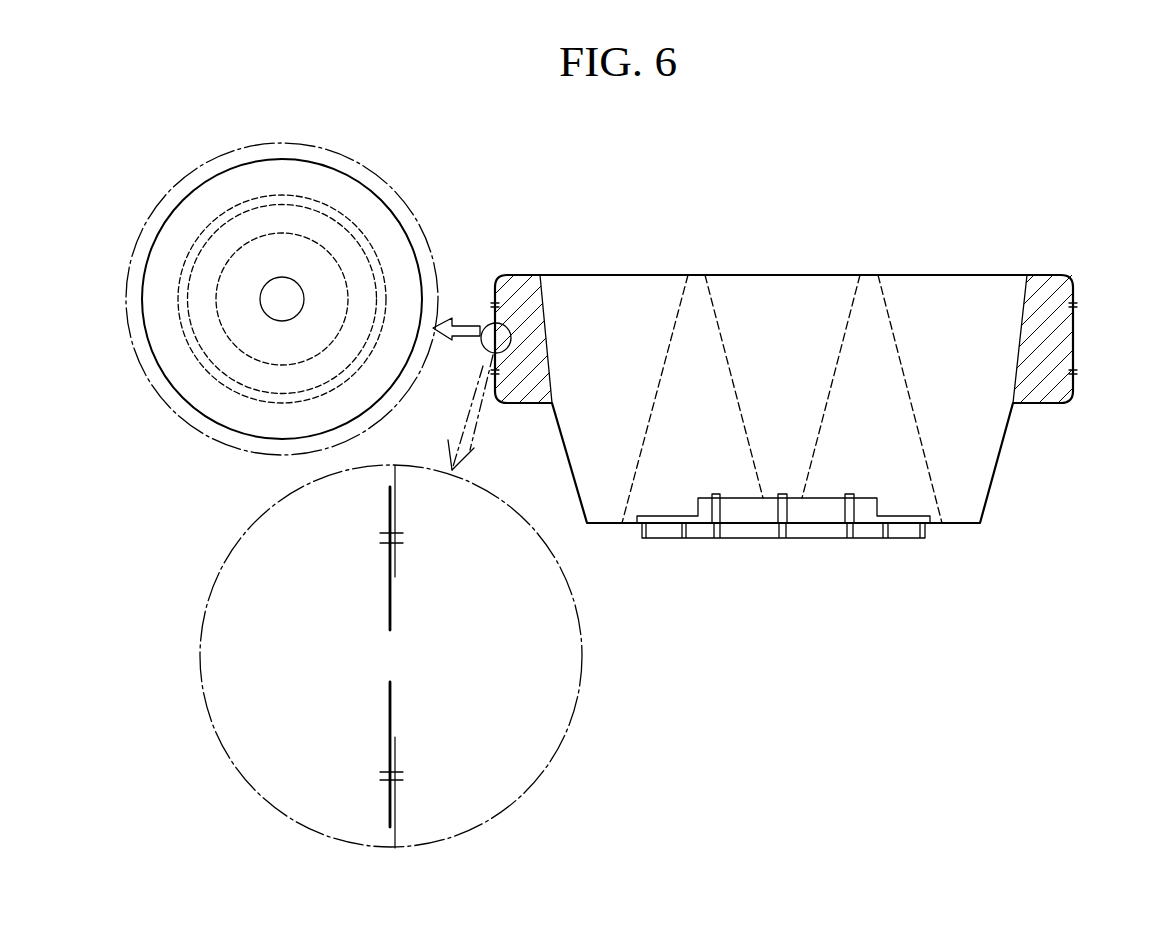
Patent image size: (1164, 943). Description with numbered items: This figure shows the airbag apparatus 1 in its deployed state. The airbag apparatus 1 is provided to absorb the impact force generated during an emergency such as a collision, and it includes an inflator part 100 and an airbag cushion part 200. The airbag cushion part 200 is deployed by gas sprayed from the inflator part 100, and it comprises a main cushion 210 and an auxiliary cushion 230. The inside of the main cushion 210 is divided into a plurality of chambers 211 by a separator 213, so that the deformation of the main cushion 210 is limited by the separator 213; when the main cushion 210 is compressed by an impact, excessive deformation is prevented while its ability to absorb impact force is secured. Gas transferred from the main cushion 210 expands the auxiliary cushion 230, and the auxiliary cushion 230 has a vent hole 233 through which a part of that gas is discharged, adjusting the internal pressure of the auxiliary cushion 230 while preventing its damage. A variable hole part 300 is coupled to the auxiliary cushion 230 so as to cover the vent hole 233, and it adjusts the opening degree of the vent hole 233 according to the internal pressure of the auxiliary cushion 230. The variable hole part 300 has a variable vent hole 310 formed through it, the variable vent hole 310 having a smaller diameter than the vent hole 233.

The airbag apparatus 1 is at (1122, 135).
The inflator part 100 is at (882, 510).
The airbag cushion part 200 is at (793, 158).
The main cushion 210 is at (782, 343).
The chambers 211 is at (870, 385).
The separator 213 is at (715, 302).
The auxiliary cushion 230 is at (1045, 275).
The vent hole 233 is at (262, 240).
The variable hole part 300 is at (389, 200).
The variable vent hole 310 is at (297, 283).